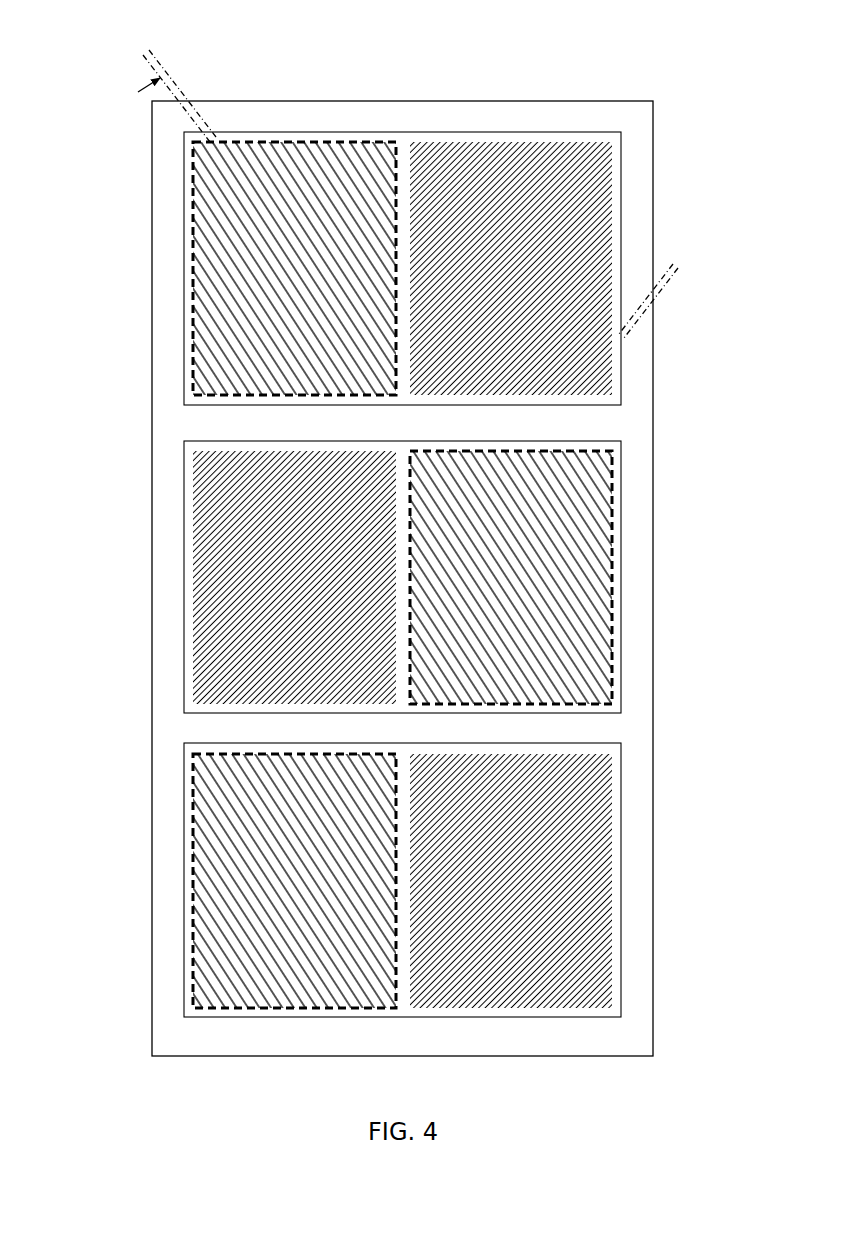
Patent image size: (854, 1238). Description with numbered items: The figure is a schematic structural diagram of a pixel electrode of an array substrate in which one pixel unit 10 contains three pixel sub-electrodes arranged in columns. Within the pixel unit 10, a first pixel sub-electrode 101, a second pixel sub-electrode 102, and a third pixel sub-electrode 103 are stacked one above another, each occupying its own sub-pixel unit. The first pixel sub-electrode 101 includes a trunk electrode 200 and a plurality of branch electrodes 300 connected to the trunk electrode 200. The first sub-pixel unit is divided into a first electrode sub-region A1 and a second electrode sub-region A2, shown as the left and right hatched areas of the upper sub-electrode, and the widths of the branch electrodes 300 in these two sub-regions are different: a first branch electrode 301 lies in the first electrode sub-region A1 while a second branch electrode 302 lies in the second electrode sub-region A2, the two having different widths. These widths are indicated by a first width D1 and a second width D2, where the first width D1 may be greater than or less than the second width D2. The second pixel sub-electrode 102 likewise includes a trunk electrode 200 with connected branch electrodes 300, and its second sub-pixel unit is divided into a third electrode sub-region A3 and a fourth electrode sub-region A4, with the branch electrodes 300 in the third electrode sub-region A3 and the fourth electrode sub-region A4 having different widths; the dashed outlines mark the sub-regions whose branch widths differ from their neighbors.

The pixel unit 10 is at (664, 74).
The first pixel sub-electrode 101 is at (620, 303).
The second pixel sub-electrode 102 is at (621, 606).
The third pixel sub-electrode 103 is at (620, 900).
The trunk electrode 200 is at (400, 222).
The branch electrodes 300 is at (497, 188).
The first branch electrode 301 is at (227, 148).
The second branch electrode 302 is at (603, 363).
The first electrode sub-region A1 is at (317, 140).
The second electrode sub-region A2 is at (613, 205).
The third electrode sub-region A3 is at (610, 545).
The fourth electrode sub-region A4 is at (190, 572).
The first width D1 is at (169, 71).
The second width D2 is at (672, 279).